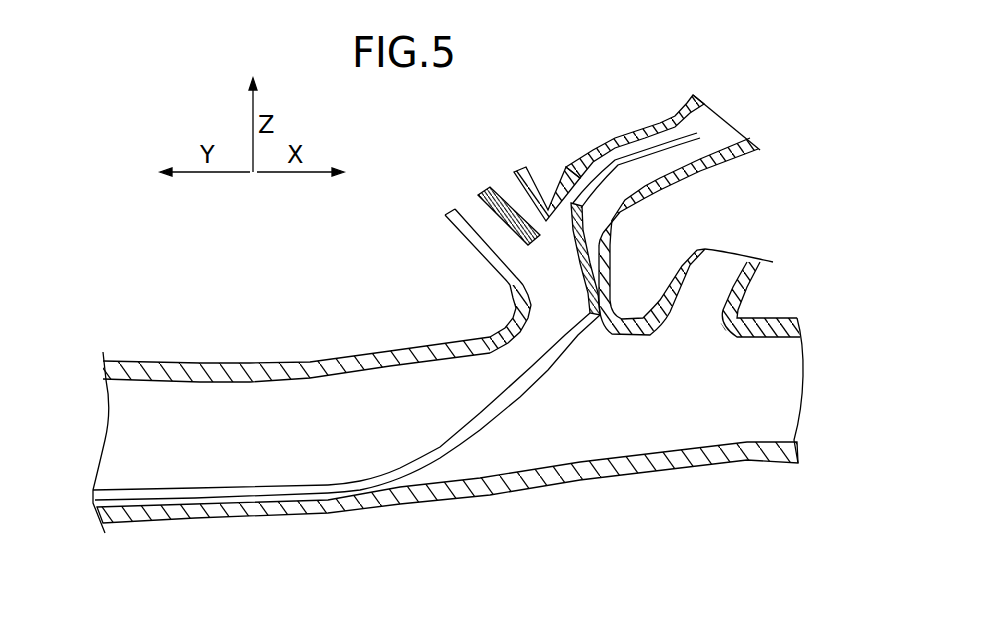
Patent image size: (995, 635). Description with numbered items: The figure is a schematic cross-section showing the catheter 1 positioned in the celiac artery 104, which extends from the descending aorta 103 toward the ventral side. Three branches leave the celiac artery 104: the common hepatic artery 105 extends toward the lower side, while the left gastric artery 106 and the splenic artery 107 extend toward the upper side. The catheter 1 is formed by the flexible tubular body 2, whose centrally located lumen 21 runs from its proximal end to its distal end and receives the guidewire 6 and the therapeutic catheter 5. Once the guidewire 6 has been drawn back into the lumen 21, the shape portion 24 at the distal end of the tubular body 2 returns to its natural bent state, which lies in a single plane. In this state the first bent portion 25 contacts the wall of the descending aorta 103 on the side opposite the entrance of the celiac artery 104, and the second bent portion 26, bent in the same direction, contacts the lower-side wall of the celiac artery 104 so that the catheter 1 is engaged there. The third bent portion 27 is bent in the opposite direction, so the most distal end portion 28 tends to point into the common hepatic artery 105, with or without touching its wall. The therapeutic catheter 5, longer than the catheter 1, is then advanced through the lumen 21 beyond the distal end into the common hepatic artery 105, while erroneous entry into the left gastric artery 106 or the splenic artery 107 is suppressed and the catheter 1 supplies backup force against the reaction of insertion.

The catheter 1 is at (191, 488).
The tubular body 2 is at (330, 505).
The therapeutic catheter 5 is at (677, 152).
The guidewire 6 is at (718, 157).
The lumen 21 is at (294, 507).
The shape portion 24 is at (604, 237).
The first bent portion 25 is at (378, 494).
The second bent portion 26 is at (590, 310).
The third bent portion 27 is at (482, 249).
The most distal end portion 28 is at (573, 203).
The descending aorta 103 is at (305, 362).
The celiac artery 104 is at (610, 266).
The common hepatic artery 105 is at (629, 137).
The left gastric artery 106 is at (447, 230).
The splenic artery 107 is at (521, 170).